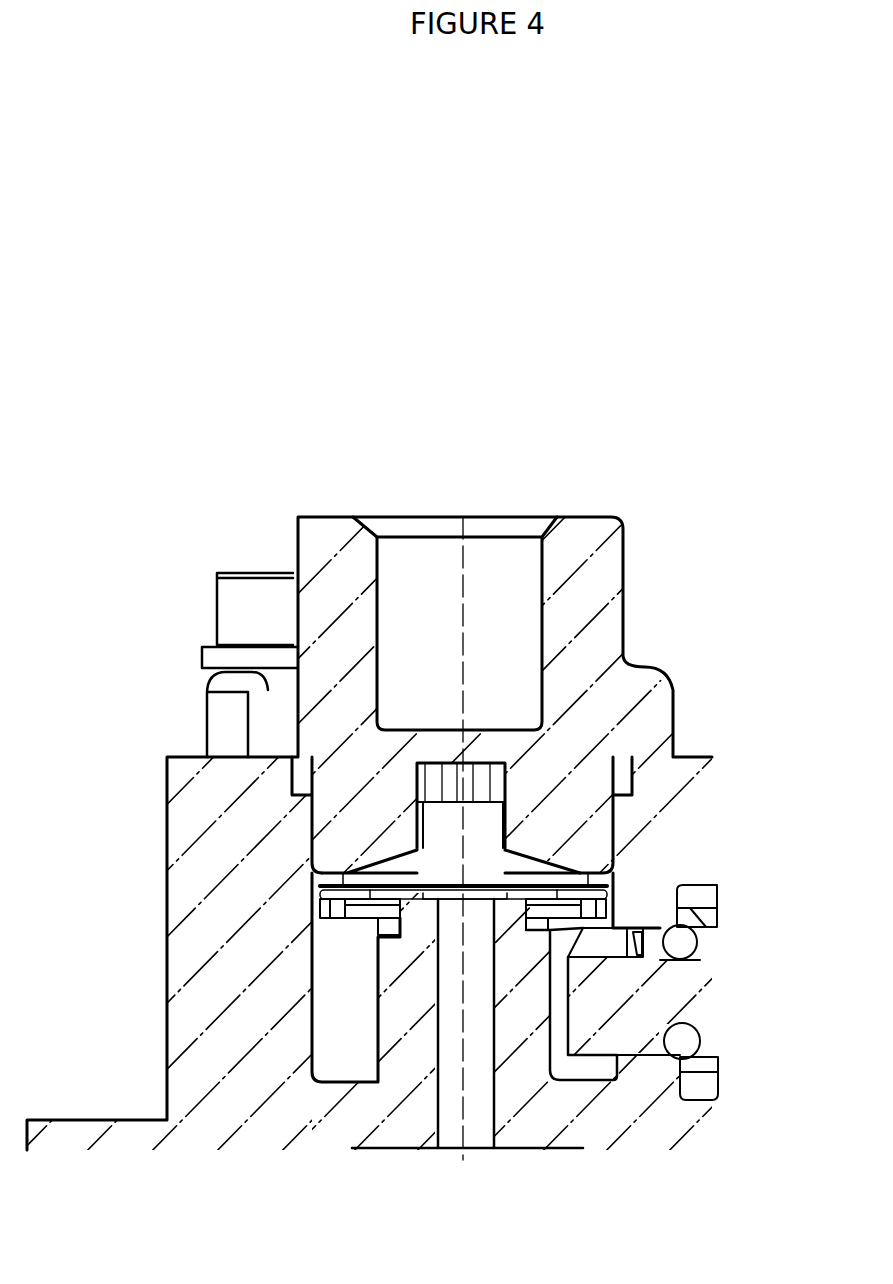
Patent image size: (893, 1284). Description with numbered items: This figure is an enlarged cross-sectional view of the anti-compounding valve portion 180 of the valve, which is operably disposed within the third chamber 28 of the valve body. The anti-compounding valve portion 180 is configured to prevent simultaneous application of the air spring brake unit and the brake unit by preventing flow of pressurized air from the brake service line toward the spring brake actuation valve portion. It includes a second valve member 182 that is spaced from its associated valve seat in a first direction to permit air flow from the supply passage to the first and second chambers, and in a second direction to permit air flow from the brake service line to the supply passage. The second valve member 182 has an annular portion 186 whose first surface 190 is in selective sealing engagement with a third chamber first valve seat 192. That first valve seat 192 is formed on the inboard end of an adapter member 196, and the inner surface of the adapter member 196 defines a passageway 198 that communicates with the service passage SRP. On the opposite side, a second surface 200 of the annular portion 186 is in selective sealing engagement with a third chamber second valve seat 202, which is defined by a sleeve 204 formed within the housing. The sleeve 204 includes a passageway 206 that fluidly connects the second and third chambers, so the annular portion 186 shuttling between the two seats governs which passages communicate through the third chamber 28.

The adapter member 196 is at (608, 578).
The second valve member 182 is at (600, 778).
The third chamber first valve seat 192 is at (615, 878).
The third chamber 28 is at (620, 876).
The passageway 198 is at (477, 790).
The annular portion 186 is at (360, 870).
The first surface 190 is at (382, 870).
The anti-compounding valve portion 180 is at (348, 931).
The sleeve 204 is at (379, 1016).
The second surface 200 is at (415, 900).
The third chamber second valve seat 202 is at (510, 900).
The passageway 206 is at (455, 1113).
The service passage SRP is at (500, 571).